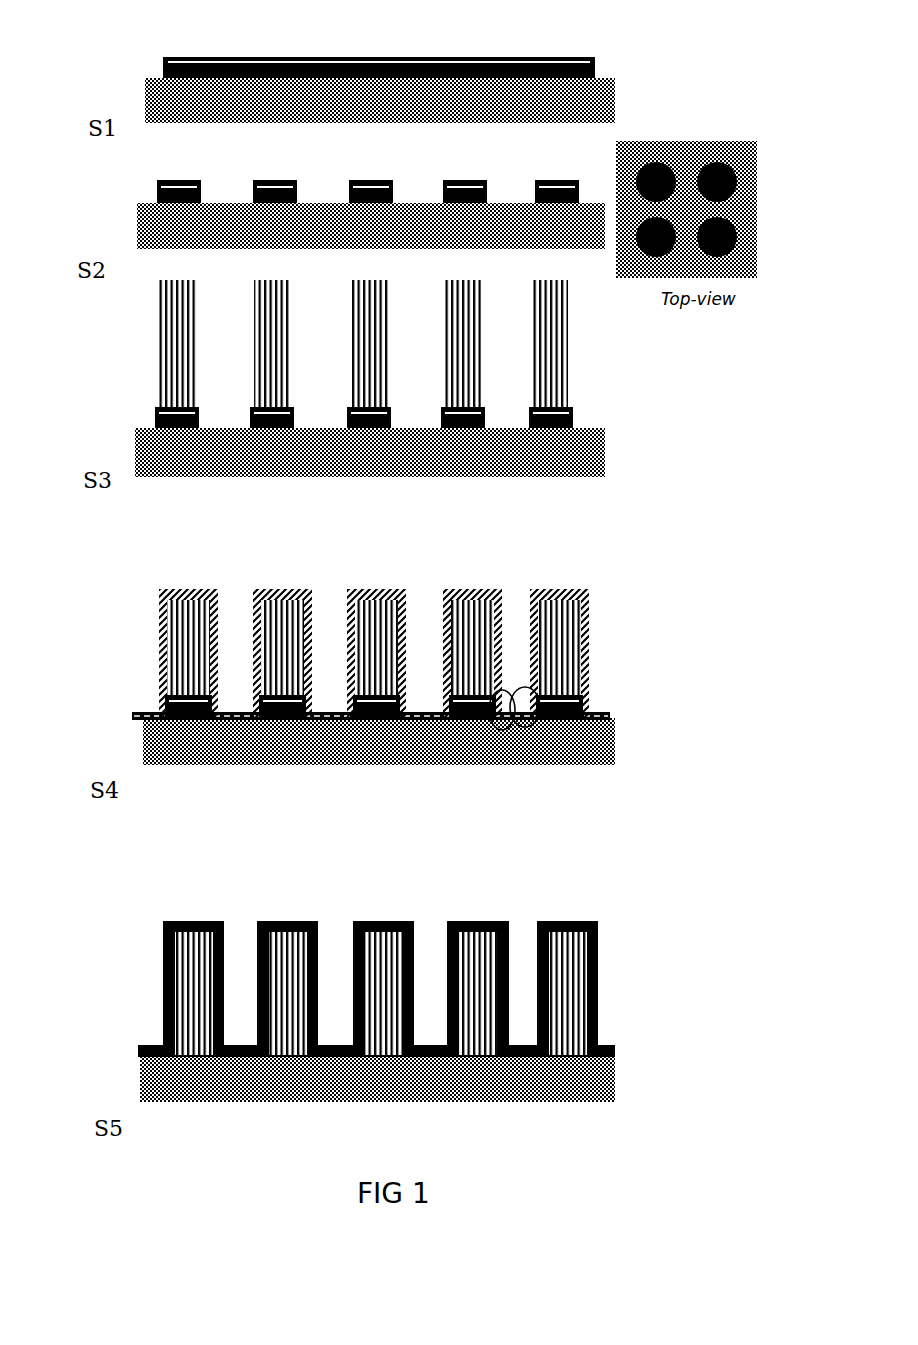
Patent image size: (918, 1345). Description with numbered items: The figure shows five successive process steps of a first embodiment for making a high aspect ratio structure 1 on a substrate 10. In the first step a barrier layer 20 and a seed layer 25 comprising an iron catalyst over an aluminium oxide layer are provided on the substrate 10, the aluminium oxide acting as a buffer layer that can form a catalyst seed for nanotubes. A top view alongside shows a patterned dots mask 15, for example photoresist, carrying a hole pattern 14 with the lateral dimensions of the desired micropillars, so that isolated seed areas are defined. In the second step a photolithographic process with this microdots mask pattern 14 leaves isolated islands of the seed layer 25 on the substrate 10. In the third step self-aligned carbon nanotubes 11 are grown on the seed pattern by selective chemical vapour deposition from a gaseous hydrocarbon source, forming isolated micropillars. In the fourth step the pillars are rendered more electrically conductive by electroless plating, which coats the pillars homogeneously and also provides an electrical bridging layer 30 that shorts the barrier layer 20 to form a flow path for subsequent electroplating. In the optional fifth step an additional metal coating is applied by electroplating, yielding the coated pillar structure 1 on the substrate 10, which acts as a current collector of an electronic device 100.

The high aspect ratio structure 1 is at (155, 625).
The substrate 10 is at (140, 80).
The carbon nanotubes 11 is at (580, 317).
The hole pattern 14 is at (718, 180).
The patterned dots mask 15 is at (680, 138).
The barrier layer 20 is at (152, 62).
The seed layer 25 is at (148, 418).
The electrical bridging layer 30 is at (498, 736).
The electronic device 100 is at (98, 755).